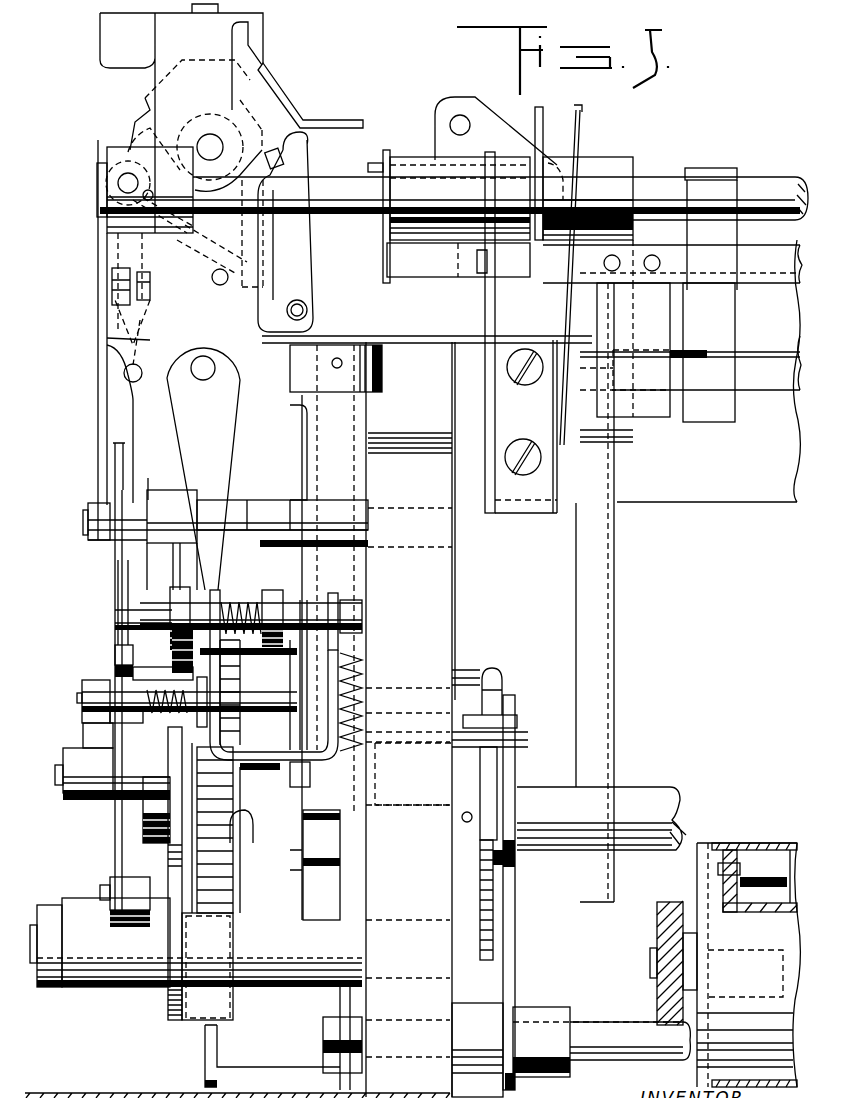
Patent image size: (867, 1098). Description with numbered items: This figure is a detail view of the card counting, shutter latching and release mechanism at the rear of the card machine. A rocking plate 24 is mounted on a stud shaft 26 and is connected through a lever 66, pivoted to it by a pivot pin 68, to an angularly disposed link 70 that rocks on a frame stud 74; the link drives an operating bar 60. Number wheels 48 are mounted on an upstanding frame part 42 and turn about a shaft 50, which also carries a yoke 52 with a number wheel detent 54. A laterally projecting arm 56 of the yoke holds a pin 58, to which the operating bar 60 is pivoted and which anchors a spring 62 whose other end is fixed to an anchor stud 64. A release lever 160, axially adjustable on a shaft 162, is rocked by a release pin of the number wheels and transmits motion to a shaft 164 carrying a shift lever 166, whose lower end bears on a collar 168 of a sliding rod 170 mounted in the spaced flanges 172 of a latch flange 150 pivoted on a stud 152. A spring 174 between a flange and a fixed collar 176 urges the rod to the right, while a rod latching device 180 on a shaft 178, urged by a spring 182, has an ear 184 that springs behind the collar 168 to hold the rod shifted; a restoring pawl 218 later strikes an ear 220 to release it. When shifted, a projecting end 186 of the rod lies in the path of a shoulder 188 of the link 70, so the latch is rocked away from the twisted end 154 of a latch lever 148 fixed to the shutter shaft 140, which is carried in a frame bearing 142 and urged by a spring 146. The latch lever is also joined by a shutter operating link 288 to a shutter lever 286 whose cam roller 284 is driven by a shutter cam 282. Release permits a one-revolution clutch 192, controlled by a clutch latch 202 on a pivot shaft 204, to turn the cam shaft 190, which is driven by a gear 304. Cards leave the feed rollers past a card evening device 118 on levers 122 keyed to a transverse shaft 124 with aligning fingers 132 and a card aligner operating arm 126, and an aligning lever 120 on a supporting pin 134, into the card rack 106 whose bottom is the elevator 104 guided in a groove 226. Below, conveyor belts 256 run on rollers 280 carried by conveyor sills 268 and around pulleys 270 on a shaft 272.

The plate 24 is at (168, 1002).
The stud shaft 26 is at (36, 955).
The upstanding frame part 42 is at (103, 37).
The number wheels 48 is at (143, 115).
The shaft 50 is at (210, 133).
The yoke 52 is at (282, 106).
The number wheel detent 54 is at (178, 278).
The laterally projecting arm 56 is at (148, 120).
The pin 58 is at (100, 205).
The operating bar 60 is at (122, 422).
The spring 62 is at (110, 340).
The anchor stud 64 is at (131, 374).
The lever 66 is at (115, 826).
The pivot pin 68 is at (100, 886).
The link 70 is at (148, 478).
The frame stud 74 is at (235, 505).
The elevator 104 is at (746, 360).
The card rack 106 is at (497, 505).
The card evening device 118 is at (446, 277).
The aligning lever 120 is at (570, 290).
The levers 122 is at (383, 254).
The transverse shaft 124 is at (97, 185).
The card aligner operating arm 126 is at (98, 400).
The aligning fingers 132 is at (736, 300).
The supporting pin 134 is at (458, 120).
The shutter shaft 140 is at (366, 330).
The frame bearing 142 is at (383, 373).
The spring 146 is at (497, 667).
The latch lever 148 is at (388, 343).
The latch flange 150 is at (300, 793).
The stud 152 is at (292, 668).
The twisted end 154 is at (283, 728).
The release lever 160 is at (308, 147).
The shaft 162 is at (305, 307).
The shaft 164 is at (203, 380).
The shift lever 166 is at (226, 452).
The collar 168 is at (183, 590).
The sliding rod 170 is at (352, 605).
The flanges 172 is at (219, 593).
The spring 174 is at (237, 600).
The collar 176 is at (278, 592).
The shaft 178 is at (77, 697).
The rod latching device 180 is at (150, 680).
The spring 182 is at (162, 710).
The ear 184 is at (185, 668).
The projecting end 186 is at (158, 612).
The shoulder 188 is at (140, 548).
The cam shaft 190 is at (640, 787).
The one-revolution clutch 192 is at (233, 872).
The clutch latch 202 is at (338, 835).
The pivot shaft 204 is at (204, 1045).
The restoring pawl 218 is at (118, 622).
The ear 220 is at (115, 652).
The groove 226 is at (612, 538).
The conveyor belts 256 is at (735, 848).
The conveyor sills 268 is at (715, 935).
The pulleys 270 is at (697, 1062).
The shaft 272 is at (656, 963).
The rollers 280 is at (740, 898).
The shutter cam 282 is at (480, 958).
The cam roller 284 is at (501, 860).
The shutter lever 286 is at (515, 950).
The shutter operating link 288 is at (514, 714).
The gear 304 is at (216, 897).